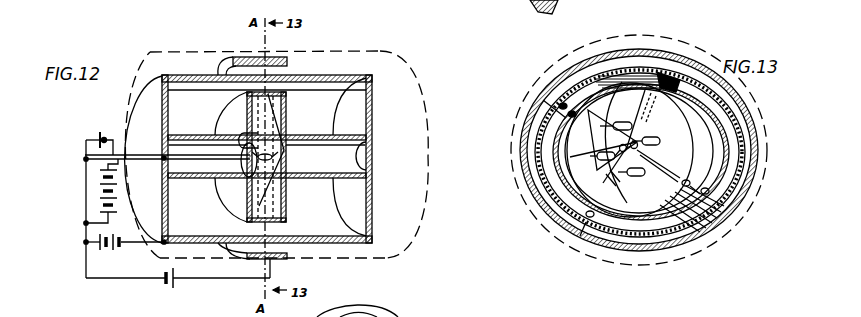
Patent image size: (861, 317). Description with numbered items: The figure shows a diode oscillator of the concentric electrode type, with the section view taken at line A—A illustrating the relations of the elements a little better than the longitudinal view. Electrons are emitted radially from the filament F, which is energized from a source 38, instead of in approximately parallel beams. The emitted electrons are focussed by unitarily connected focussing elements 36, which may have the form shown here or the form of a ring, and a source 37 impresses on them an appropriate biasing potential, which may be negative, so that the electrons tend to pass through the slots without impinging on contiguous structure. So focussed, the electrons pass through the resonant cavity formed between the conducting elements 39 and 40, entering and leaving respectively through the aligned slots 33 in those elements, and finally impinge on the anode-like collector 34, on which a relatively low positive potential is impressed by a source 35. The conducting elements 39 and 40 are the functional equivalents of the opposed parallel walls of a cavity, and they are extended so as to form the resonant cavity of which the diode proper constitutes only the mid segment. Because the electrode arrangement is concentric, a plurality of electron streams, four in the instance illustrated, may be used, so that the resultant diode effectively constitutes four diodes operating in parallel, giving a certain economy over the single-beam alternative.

In FIG. 12, the aligned slots 33 is at (284, 118).
In FIG. 13, the aligned slots 33 is at (628, 159).
In FIG. 12, the anode-like collector 34 is at (270, 62).
In FIG. 13, the anode-like collector 34 is at (723, 127).
In FIG. 12, the source 35 is at (175, 282).
In FIG. 12, the focussing elements 36 is at (252, 188).
In FIG. 13, the focussing elements 36 is at (600, 130).
In FIG. 12, the source 37 is at (97, 197).
In FIG. 12, the source 38 is at (95, 136).
In FIG. 12, the conducting element 39 is at (283, 94).
In FIG. 13, the conducting element 39 is at (688, 170).
In FIG. 12, the conducting element 40 is at (303, 75).
In FIG. 13, the conducting element 40 is at (708, 153).
In FIG. 12, the filament F is at (286, 158).
In FIG. 13, the filament F is at (648, 150).